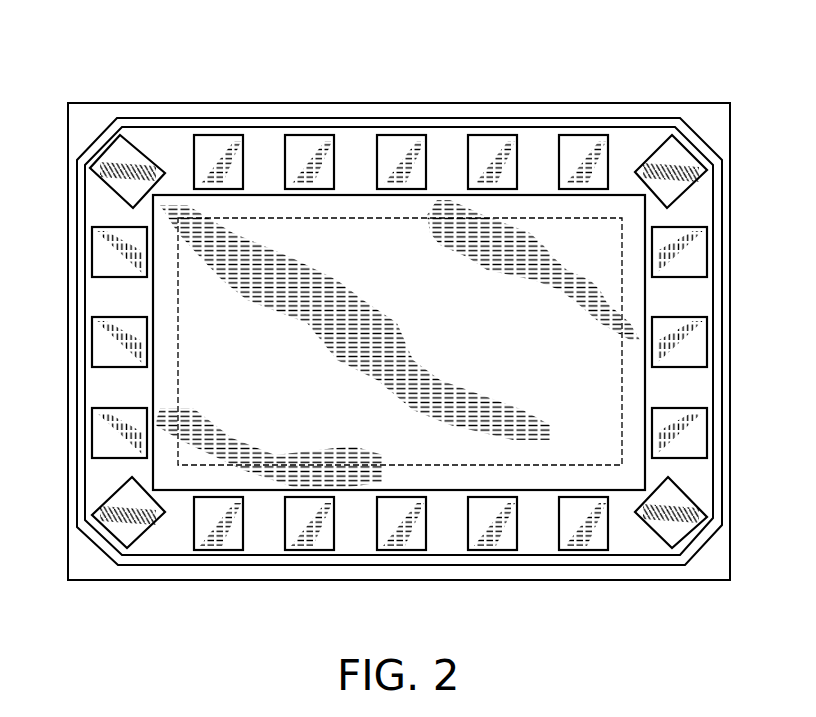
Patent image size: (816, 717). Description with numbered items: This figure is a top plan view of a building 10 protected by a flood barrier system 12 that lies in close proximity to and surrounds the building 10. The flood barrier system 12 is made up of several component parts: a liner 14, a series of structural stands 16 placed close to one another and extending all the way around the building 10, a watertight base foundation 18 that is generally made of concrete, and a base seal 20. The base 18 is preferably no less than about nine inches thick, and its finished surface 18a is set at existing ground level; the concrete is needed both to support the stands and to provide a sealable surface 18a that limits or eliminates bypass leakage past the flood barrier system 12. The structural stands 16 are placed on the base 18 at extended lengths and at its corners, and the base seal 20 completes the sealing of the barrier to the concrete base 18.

The building 10 is at (266, 388).
The flood barrier system 12 is at (722, 300).
The liner 14 is at (180, 555).
The structural stands 16 is at (127, 158).
The watertight base foundation 18 is at (730, 542).
The finished surface 18a is at (712, 567).
The base seal 20 is at (82, 306).